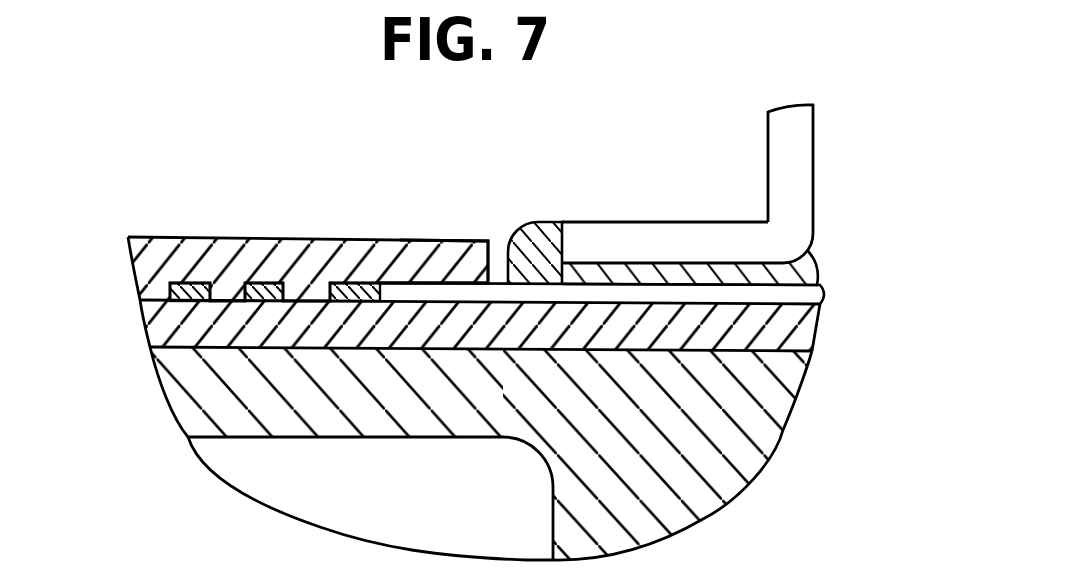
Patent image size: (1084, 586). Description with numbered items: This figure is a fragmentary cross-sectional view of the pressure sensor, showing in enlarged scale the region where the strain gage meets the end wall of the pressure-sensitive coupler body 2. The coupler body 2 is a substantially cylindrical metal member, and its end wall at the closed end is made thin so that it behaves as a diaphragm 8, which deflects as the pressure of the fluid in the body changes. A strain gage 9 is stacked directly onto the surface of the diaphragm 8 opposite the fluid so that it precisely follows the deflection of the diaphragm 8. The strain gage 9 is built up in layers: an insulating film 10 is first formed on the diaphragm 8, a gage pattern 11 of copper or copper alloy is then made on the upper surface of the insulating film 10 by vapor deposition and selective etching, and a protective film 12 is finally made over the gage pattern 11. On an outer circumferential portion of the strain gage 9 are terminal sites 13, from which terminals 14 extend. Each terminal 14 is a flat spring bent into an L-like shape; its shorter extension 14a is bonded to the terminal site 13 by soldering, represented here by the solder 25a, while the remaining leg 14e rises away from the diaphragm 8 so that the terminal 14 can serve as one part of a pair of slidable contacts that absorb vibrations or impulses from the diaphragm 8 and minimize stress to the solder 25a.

The pressure-sensitive coupler body 2 is at (780, 427).
The diaphragm 8 is at (412, 413).
The strain gage 9 is at (313, 217).
The insulating film 10 is at (152, 322).
The gage pattern 11 is at (192, 282).
The protective film 12 is at (402, 239).
The terminal site 13 is at (817, 264).
The terminal 14 is at (741, 184).
The shorter extension 14a is at (647, 230).
The upright portion of lead terminal 14e is at (813, 195).
The solder 25a is at (538, 240).